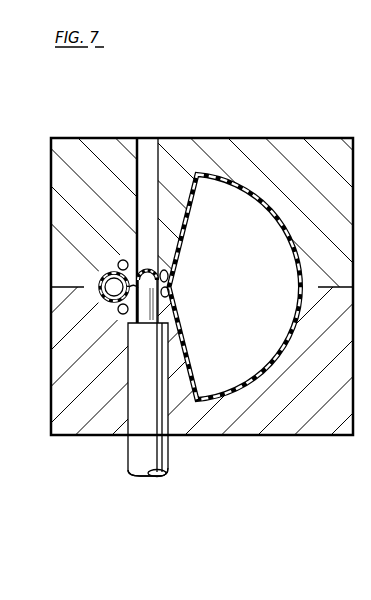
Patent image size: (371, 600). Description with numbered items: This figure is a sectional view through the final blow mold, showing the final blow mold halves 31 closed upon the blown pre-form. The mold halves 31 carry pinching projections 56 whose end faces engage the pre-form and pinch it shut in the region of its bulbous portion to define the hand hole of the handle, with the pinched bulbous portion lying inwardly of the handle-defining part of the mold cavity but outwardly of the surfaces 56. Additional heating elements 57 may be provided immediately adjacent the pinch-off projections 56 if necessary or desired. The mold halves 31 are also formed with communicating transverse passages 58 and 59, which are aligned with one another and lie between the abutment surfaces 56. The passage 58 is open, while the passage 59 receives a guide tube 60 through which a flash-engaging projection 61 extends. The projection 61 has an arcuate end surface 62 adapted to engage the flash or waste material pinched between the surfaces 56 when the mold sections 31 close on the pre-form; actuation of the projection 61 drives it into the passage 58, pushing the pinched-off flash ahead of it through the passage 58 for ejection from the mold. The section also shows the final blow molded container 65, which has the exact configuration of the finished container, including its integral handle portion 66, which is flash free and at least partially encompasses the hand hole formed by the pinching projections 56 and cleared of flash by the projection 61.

The final blow mold halves 31 is at (268, 455).
The pinching projections 56 is at (126, 260).
The heating elements 57 is at (109, 276).
The transverse passage 58 is at (140, 152).
The transverse passage 59 is at (159, 339).
The guide tube 60 is at (168, 464).
The flash-engaging projection 61 is at (148, 320).
The end surface 62 is at (150, 270).
The final blow molded container 65 is at (287, 204).
The integral handle portion 66 is at (105, 298).